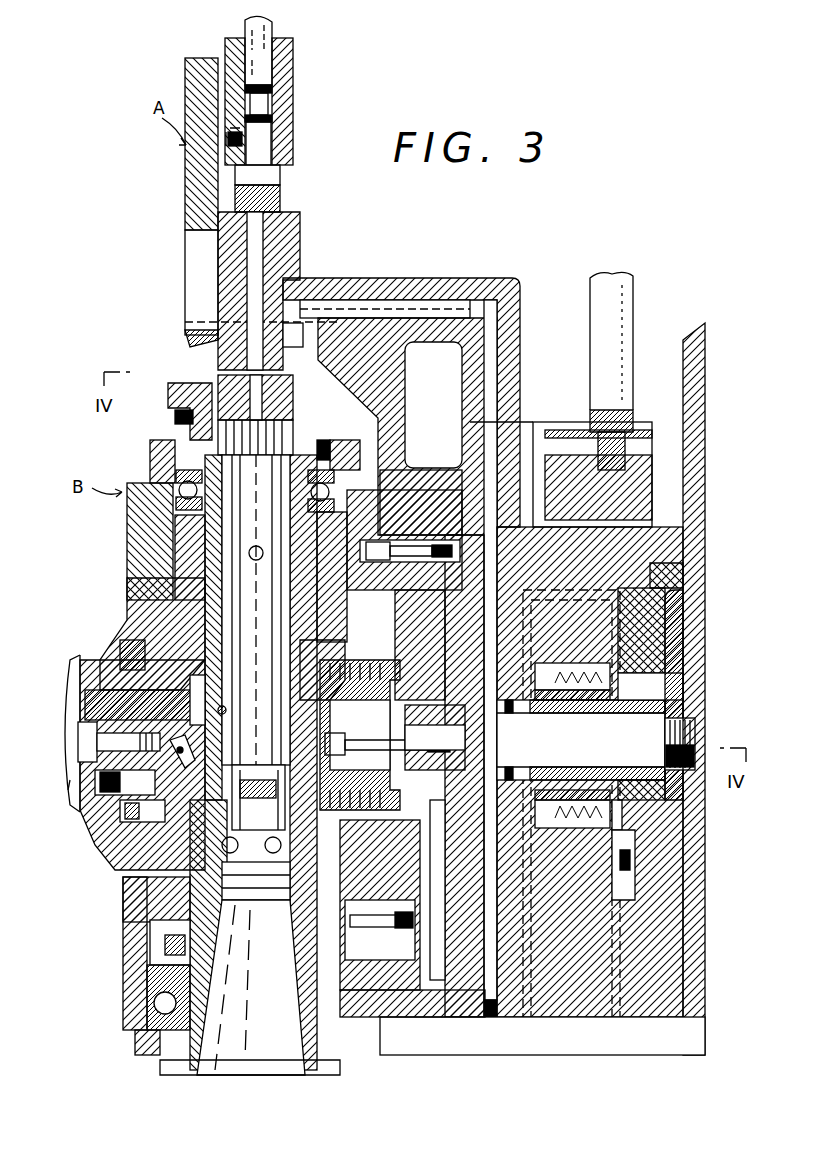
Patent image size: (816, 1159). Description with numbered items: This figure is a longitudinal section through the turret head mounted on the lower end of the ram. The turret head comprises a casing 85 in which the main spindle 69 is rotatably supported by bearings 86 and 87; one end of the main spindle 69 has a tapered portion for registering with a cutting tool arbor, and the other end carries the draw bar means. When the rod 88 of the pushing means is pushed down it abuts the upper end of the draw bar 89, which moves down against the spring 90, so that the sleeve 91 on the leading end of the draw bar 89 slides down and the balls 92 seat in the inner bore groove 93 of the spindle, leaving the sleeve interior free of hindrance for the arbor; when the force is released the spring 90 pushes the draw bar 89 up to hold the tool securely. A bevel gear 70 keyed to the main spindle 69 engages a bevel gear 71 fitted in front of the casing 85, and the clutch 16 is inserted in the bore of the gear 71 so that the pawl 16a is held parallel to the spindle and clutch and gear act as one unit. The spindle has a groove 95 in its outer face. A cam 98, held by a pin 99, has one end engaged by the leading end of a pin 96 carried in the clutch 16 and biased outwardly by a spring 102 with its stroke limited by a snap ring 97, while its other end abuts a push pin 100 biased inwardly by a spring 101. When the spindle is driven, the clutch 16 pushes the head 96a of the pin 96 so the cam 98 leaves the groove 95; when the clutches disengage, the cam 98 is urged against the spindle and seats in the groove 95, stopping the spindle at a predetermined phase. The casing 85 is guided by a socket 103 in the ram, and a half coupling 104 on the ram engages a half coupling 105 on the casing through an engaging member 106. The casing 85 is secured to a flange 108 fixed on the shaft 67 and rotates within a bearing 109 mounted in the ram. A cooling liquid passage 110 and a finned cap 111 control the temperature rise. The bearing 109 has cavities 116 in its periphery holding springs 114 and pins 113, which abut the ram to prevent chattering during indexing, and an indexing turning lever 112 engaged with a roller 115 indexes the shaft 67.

The clutch 16 is at (80, 682).
The pawl 16a is at (68, 778).
The shaft 67 is at (518, 700).
The main spindle 69 is at (200, 925).
The bevel gear 70 is at (180, 610).
The bevel gear 71 is at (135, 652).
The casing 85 is at (132, 535).
The bearing 86 is at (158, 990).
The bearing 87 is at (178, 486).
The rod 88 is at (300, 352).
The draw bar 89 is at (345, 378).
The spring 90 is at (317, 670).
The sleeve 91 is at (270, 797).
The balls 92 is at (281, 848).
The inner bore groove 93 is at (284, 876).
The groove 95 is at (208, 762).
The pin 96 is at (105, 745).
The head 96a is at (80, 732).
The snap ring 97 is at (202, 700).
The cam 98 is at (210, 717).
The pin 99 is at (194, 751).
The push pin 100 is at (148, 806).
The spring 101 is at (127, 782).
The spring 102 is at (144, 705).
The socket 103 is at (416, 478).
The half coupling 104 is at (440, 556).
The half coupling 105 is at (380, 543).
The engaging member 106 is at (425, 520).
The flange 108 is at (462, 655).
The bearing 109 is at (578, 700).
The cooling liquid passage 110 is at (497, 600).
The finned cap 111 is at (381, 748).
The indexing turning lever 112 is at (678, 820).
The pins 113 is at (525, 822).
The springs 114 is at (582, 835).
The roller 115 is at (608, 880).
The cavities 116 is at (562, 830).